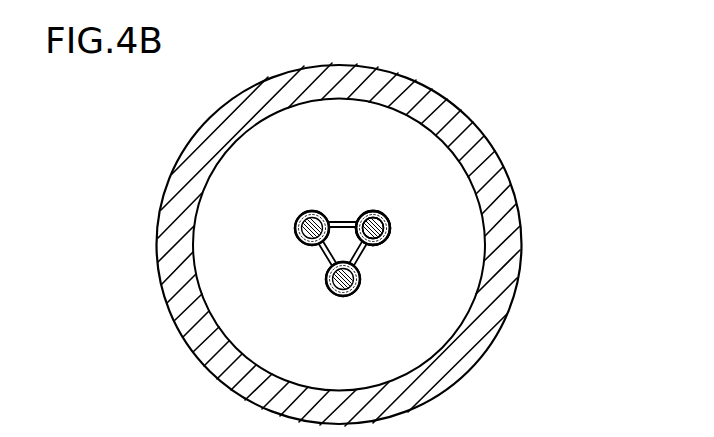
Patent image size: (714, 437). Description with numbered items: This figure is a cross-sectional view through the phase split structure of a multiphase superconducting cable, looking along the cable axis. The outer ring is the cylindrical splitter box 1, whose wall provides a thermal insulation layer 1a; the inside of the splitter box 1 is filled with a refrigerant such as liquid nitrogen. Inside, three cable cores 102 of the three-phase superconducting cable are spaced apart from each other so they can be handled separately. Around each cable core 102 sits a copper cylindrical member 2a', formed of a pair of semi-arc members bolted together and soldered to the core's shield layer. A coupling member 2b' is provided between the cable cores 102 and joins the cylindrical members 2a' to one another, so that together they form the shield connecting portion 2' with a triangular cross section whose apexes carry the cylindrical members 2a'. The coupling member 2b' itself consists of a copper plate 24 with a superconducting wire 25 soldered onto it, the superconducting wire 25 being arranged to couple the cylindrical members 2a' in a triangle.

The splitter box 1 is at (339, 213).
The thermal insulation layer 1a is at (339, 212).
The shield connecting portion 2' is at (365, 229).
The cylindrical member 2a' is at (332, 216).
The cable core 102 is at (334, 271).
The copper plate 24 is at (465, 220).
The superconducting wire 25 is at (357, 238).
The coupling member 2b' is at (493, 241).